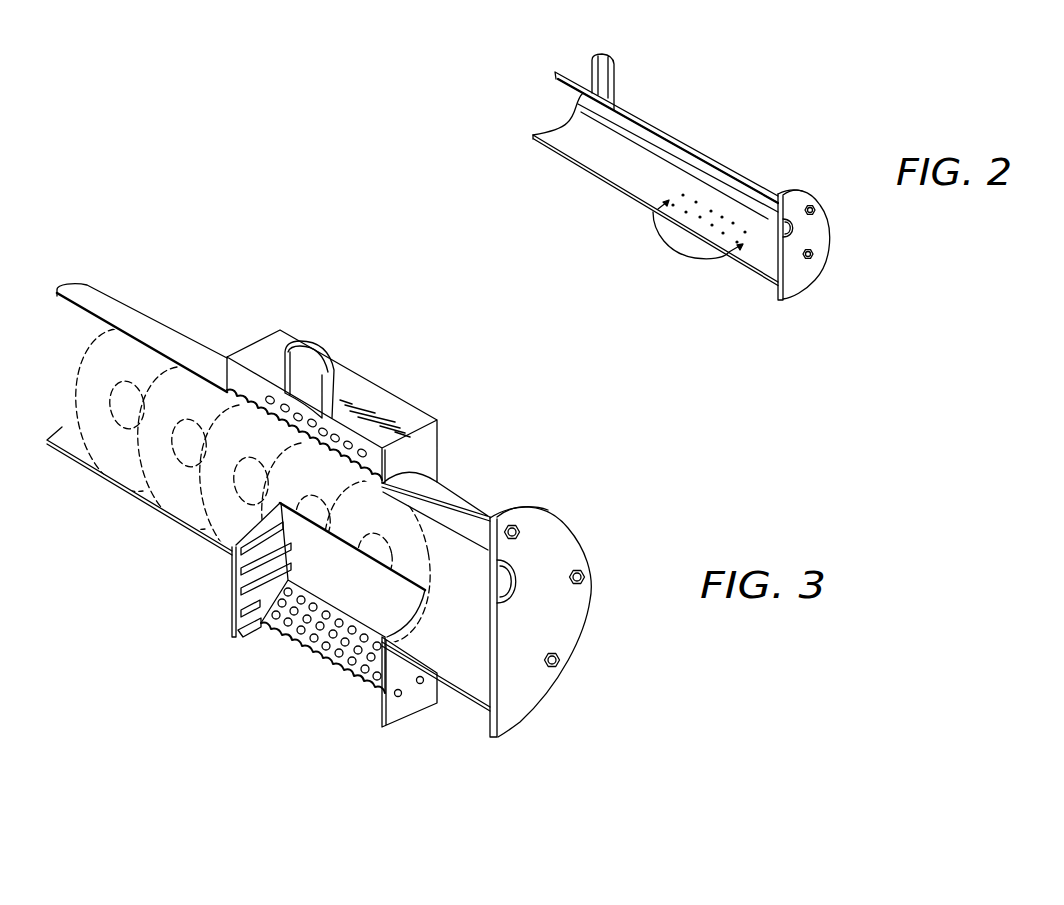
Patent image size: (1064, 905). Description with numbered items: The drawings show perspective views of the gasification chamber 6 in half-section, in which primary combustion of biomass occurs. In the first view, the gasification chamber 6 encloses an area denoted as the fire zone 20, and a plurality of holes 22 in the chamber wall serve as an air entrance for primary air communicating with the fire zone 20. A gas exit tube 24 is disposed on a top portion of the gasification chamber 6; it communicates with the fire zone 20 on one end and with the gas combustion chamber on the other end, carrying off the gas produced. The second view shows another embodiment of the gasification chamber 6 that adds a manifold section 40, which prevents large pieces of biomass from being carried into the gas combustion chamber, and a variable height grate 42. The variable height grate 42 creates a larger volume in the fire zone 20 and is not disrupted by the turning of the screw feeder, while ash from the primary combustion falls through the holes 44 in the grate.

In FIG. 3, the gasification chamber 6 is at (556, 541).
In FIG. 2, the fire zone 20 is at (673, 243).
In FIG. 2, the holes 22 is at (711, 210).
In FIG. 2, the gas exit tube 24 is at (617, 75).
In FIG. 3, the manifold section 40 is at (367, 398).
In FIG. 3, the variable height grate 42 is at (330, 655).
In FIG. 3, the holes 44 is at (356, 660).